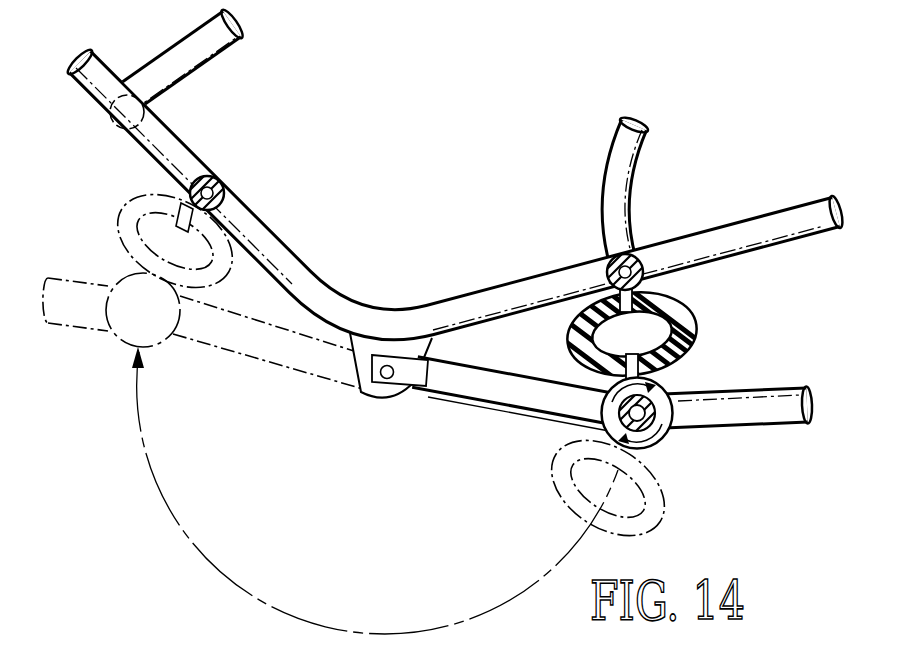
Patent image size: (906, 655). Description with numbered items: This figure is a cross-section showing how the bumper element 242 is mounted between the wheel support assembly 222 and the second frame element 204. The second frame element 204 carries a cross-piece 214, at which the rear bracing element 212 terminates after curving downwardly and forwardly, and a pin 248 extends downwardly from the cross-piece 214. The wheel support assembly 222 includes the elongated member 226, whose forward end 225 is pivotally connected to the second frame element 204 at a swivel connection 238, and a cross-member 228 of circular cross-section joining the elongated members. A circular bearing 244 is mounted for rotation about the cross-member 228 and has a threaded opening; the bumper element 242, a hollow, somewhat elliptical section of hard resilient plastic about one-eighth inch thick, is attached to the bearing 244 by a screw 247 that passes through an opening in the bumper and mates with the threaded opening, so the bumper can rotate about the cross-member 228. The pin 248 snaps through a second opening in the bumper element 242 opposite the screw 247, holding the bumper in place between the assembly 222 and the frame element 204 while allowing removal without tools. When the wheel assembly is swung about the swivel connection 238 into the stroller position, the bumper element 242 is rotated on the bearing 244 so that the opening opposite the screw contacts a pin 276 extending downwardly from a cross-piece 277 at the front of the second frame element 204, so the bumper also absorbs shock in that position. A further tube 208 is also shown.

The second frame element 204 is at (529, 268).
The upper tube 208 is at (230, 48).
The rear bracing element 212 is at (644, 168).
The cross-piece 214 is at (639, 259).
The wheel support assembly 222 is at (500, 428).
The forward end 225 is at (418, 390).
The elongated member 226 is at (757, 424).
The cross-member 228 is at (651, 402).
The swivel connection 238 is at (372, 382).
The bumper element 242 is at (629, 349).
The circular bearing 244 is at (665, 436).
The screw 247 is at (569, 340).
The pin 248 is at (662, 299).
The pin 276 is at (176, 208).
The cross-piece 277 is at (221, 183).